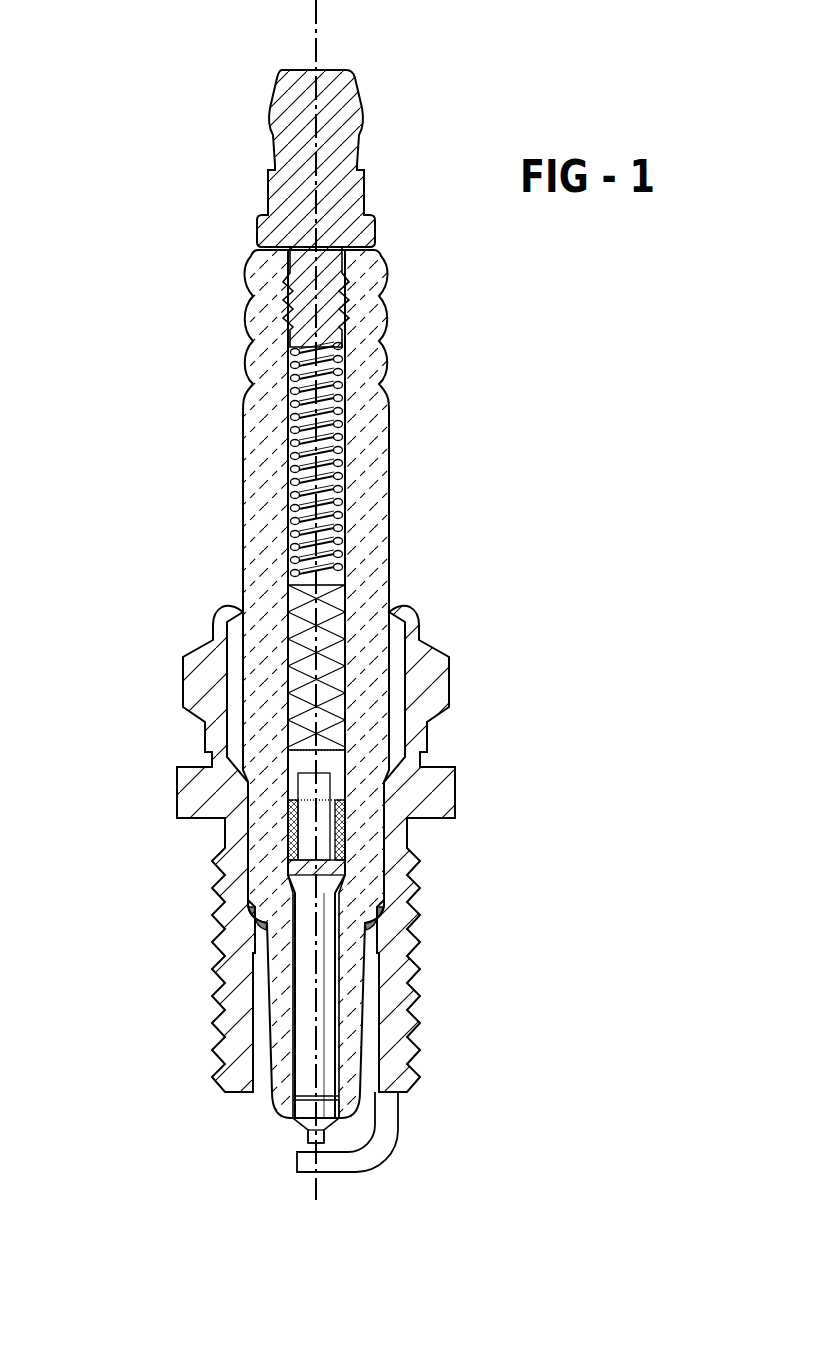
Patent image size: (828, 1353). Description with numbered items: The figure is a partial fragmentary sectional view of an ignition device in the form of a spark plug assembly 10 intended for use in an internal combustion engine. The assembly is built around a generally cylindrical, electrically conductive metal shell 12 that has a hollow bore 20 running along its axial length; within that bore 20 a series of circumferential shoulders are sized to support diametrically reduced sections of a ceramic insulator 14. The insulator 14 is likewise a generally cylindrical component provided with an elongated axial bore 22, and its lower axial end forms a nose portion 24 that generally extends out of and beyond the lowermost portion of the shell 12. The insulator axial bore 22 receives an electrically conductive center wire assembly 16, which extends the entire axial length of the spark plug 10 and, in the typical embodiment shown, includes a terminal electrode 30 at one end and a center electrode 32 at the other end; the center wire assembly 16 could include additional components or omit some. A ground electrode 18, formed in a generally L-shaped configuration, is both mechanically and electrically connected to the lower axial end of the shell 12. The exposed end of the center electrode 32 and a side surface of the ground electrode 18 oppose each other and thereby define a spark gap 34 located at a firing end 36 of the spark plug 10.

The spark plug assembly 10 is at (156, 166).
The metal shell 12 is at (457, 788).
The ceramic insulator 14 is at (243, 478).
The center wire assembly 16 is at (345, 610).
The ground electrode 18 is at (377, 1165).
The hollow bore 20 is at (258, 862).
The axial bore 22 is at (302, 940).
The nose portion 24 is at (343, 1110).
The terminal electrode 30 is at (340, 108).
The center electrode 32 is at (328, 1100).
The spark gap 34 is at (312, 1148).
The firing end 36 is at (312, 1205).